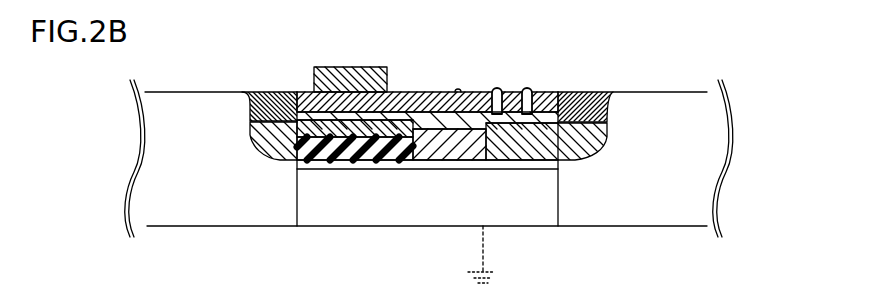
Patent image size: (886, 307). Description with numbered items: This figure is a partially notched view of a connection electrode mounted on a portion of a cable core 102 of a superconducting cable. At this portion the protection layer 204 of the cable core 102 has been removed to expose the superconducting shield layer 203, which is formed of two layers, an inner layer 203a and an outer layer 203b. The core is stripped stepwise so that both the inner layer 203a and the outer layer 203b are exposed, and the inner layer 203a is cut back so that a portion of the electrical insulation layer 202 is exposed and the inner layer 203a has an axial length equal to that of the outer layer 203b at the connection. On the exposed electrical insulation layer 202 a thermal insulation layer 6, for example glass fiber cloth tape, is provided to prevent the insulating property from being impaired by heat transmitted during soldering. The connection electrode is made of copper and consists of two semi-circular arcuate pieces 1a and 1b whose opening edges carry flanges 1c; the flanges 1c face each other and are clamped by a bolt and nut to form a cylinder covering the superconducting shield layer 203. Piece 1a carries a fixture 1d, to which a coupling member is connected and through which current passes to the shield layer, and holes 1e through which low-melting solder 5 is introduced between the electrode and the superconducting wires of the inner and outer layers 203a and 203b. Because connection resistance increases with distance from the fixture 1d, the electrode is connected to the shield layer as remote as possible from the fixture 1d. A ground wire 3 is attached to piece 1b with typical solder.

The cable core 102 is at (655, 80).
The protection layer 204 is at (180, 103).
The piece 1a is at (418, 92).
The piece 1b is at (502, 205).
The flange 1c is at (523, 165).
The fixture 1d is at (335, 78).
The hole 1e is at (500, 88).
The low-melting solder 5 is at (464, 97).
The thermal insulation layer 6 is at (297, 173).
The electrical insulation layer 202 is at (353, 152).
The superconducting shield layer 203 is at (382, 206).
The inner layer 203a is at (428, 152).
The outer layer 203b is at (270, 150).
The ground wire 3 is at (483, 253).